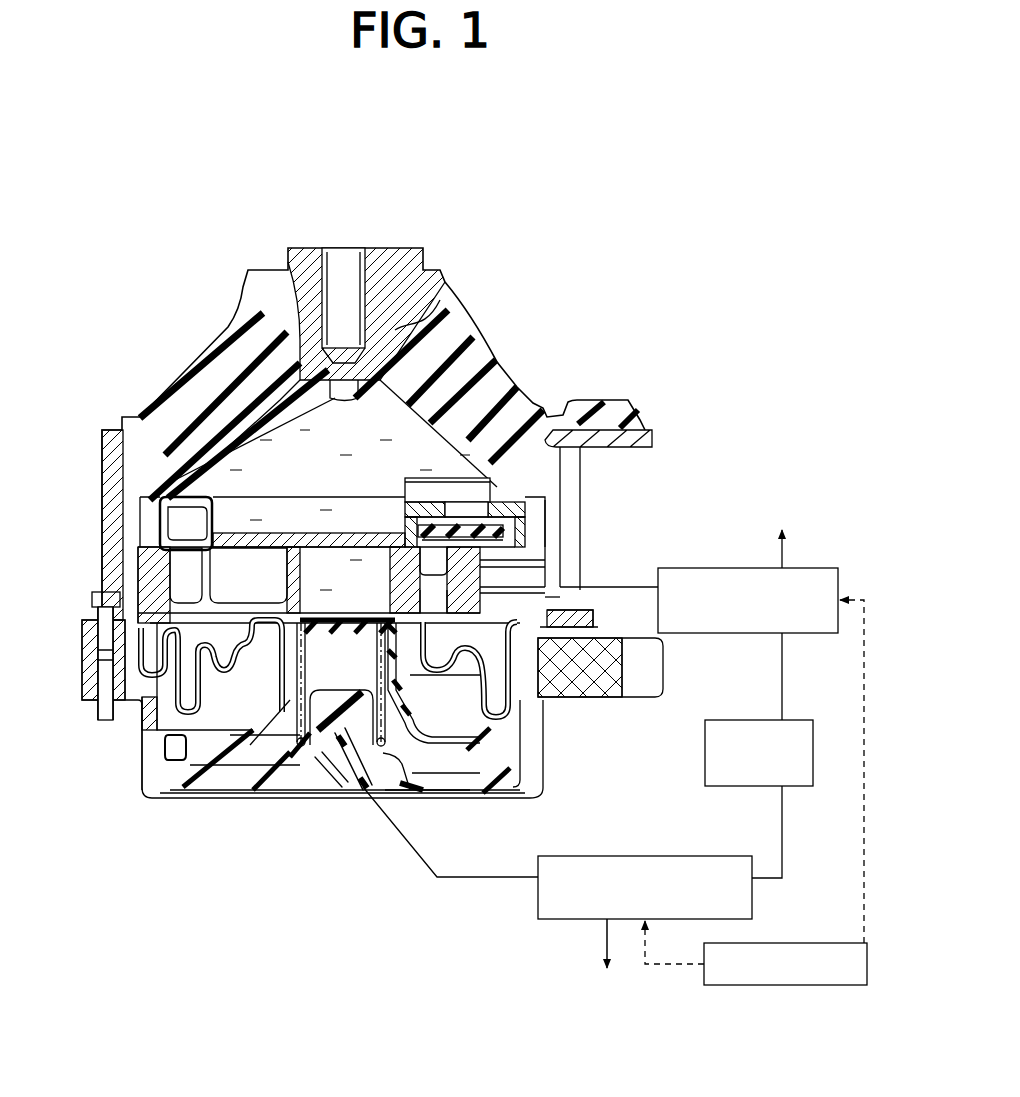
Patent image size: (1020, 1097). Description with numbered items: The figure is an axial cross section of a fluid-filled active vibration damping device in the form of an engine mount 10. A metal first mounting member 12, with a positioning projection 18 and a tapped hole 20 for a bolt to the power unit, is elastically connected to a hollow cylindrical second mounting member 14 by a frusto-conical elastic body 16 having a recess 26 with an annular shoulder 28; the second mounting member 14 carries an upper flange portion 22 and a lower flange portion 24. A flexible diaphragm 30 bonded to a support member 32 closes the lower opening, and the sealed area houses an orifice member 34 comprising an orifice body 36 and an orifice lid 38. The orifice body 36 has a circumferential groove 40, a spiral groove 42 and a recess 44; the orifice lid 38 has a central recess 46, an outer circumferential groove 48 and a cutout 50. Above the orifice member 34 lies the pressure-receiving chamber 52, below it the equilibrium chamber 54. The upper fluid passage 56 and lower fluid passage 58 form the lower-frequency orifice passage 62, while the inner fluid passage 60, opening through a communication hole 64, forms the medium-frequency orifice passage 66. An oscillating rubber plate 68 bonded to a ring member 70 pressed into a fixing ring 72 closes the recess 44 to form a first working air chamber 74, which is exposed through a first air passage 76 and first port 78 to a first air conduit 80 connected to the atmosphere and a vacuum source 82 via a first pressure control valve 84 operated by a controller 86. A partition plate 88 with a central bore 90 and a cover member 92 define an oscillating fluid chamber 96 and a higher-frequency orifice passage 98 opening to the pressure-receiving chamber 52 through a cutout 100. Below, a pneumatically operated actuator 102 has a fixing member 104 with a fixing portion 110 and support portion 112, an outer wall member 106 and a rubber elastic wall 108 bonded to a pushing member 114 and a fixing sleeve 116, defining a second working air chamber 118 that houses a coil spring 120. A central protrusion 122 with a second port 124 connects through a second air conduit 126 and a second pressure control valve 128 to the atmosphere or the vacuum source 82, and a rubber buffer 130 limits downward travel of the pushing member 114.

The engine mount 10 is at (498, 291).
The first mounting member 12 is at (428, 282).
The second mounting member 14 is at (570, 489).
The elastic body 16 is at (478, 342).
The positioning projection 18 is at (407, 257).
The tapped hole 20 is at (335, 262).
The upper flange portion 22 is at (645, 440).
The lower flange portion 24 is at (90, 613).
The recess 26 is at (273, 413).
The annular shoulder 28 is at (173, 497).
The flexible diaphragm 30 is at (163, 697).
The support member 32 is at (83, 633).
The orifice member 34 is at (545, 555).
The orifice body 36 is at (133, 576).
The orifice lid 38 is at (178, 470).
The circumferential groove 40 is at (177, 563).
The spiral groove 42 is at (222, 567).
The recess 44 is at (537, 515).
The central recess 46 is at (205, 493).
The outer circumferential groove 48 is at (180, 560).
The cutout 50 is at (400, 540).
The pressure-receiving chamber 52 is at (340, 439).
The equilibrium chamber 54 is at (506, 649).
The upper fluid passage 56 is at (170, 510).
The lower fluid passage 58 is at (193, 557).
The inner fluid passage 60 is at (263, 557).
The lower-frequency orifice passage 62 is at (68, 470).
The communication hole 64 is at (387, 577).
The medium-frequency orifice passage 66 is at (309, 540).
The oscillating rubber plate 68 is at (520, 515).
The ring member 70 is at (525, 570).
The fixing ring 72 is at (540, 535).
The first working air chamber 74 is at (468, 553).
The first air passage 76 is at (545, 620).
The first port 78 is at (560, 597).
The first air conduit 80 is at (645, 585).
The vacuum source 82 is at (735, 720).
The first pressure control valve 84 is at (825, 568).
The controller 86 is at (725, 985).
The partition plate 88 is at (425, 490).
The central bore 90 is at (523, 482).
The cover member 92 is at (462, 482).
The oscillating fluid chamber 96 is at (472, 520).
The higher-frequency orifice passage 98 is at (408, 482).
The cutout 100 is at (415, 530).
The pneumatically operated actuator 102 is at (233, 810).
The fixing member 104 is at (535, 787).
The outer wall member 106 is at (250, 789).
The rubber elastic wall 108 is at (483, 747).
The fixing portion 110 is at (613, 667).
The support portion 112 is at (483, 797).
The pushing member 114 is at (290, 748).
The fixing sleeve 116 is at (170, 740).
The second working air chamber 118 is at (242, 769).
The coil spring 120 is at (310, 782).
The central protrusion 122 is at (392, 765).
The second port 124 is at (350, 795).
The second air conduit 126 is at (492, 878).
The second pressure control valve 128 is at (648, 856).
The rubber buffer 130 is at (280, 692).